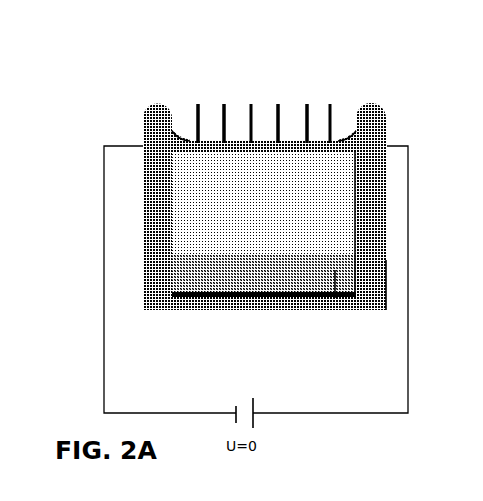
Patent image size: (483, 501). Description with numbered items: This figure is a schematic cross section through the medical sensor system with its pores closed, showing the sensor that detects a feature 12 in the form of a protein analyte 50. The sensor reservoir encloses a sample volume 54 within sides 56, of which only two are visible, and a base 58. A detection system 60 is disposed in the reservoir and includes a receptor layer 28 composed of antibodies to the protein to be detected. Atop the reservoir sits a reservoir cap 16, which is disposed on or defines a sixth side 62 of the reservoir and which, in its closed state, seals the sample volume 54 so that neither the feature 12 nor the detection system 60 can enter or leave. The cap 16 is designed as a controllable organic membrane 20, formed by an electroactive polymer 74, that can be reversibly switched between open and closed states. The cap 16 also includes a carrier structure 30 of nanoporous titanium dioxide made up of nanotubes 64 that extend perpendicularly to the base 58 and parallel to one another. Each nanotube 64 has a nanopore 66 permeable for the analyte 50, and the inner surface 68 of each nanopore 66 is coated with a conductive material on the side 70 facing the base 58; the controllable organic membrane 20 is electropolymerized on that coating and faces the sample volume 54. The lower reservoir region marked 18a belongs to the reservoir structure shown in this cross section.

The feature 12 is at (264, 219).
The analyte 50 is at (264, 219).
The reservoir cap 16 is at (350, 137).
The cell wall lower portion 18a is at (386, 295).
The controllable organic membrane 20 is at (295, 129).
The receptor layer 28 is at (268, 258).
The electroactive polymer 74 is at (216, 143).
The detection system 60 is at (335, 298).
The carrier structure 30 is at (135, 91).
The nanotubes 64 is at (198, 117).
The sample volume 54 is at (343, 190).
The sides 56 is at (163, 246).
The base 58 is at (207, 299).
The sixth side 62 is at (295, 129).
The nanopore 66 is at (290, 121).
The inner surface 68 is at (168, 137).
The side facing the base 70 is at (204, 165).